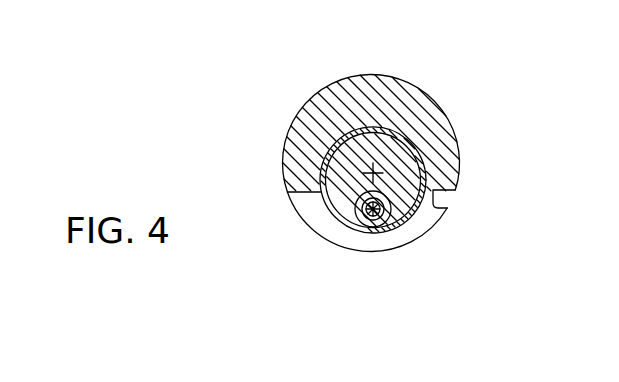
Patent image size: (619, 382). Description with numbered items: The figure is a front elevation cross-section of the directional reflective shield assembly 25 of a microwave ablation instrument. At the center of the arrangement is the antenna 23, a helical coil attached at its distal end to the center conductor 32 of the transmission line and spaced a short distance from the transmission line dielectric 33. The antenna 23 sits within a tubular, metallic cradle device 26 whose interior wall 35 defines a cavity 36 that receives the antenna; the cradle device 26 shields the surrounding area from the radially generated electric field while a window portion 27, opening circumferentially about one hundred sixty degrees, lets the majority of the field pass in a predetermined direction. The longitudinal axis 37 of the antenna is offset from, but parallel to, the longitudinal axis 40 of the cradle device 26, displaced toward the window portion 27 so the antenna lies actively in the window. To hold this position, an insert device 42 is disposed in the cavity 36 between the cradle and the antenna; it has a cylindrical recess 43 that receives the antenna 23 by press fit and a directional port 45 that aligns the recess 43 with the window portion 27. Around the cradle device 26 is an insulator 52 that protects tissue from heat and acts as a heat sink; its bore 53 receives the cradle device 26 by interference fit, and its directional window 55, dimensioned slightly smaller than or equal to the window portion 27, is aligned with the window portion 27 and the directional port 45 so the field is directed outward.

The shield assembly 25 is at (478, 84).
The insulator 52 is at (334, 84).
The cradle device 26 is at (373, 126).
The longitudinal axis of cradle device 40 is at (373, 173).
The insert device 42 is at (396, 189).
The antenna 23 is at (424, 153).
The interior wall 35 is at (329, 146).
The cavity 36 is at (373, 173).
The bore 53 is at (321, 190).
The directional window 55 is at (449, 207).
The transmission line dielectric 33 is at (355, 212).
The recess 43 is at (348, 216).
The directional port 45 is at (362, 229).
The center conductor 32 is at (356, 236).
The longitudinal axis of antenna 37 is at (392, 205).
The window portion 27 is at (425, 192).